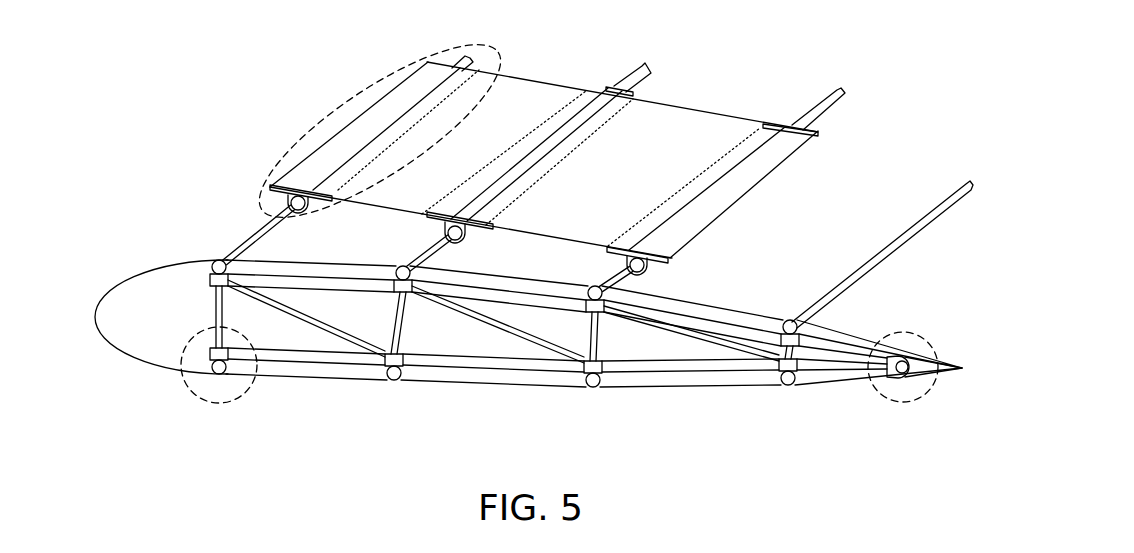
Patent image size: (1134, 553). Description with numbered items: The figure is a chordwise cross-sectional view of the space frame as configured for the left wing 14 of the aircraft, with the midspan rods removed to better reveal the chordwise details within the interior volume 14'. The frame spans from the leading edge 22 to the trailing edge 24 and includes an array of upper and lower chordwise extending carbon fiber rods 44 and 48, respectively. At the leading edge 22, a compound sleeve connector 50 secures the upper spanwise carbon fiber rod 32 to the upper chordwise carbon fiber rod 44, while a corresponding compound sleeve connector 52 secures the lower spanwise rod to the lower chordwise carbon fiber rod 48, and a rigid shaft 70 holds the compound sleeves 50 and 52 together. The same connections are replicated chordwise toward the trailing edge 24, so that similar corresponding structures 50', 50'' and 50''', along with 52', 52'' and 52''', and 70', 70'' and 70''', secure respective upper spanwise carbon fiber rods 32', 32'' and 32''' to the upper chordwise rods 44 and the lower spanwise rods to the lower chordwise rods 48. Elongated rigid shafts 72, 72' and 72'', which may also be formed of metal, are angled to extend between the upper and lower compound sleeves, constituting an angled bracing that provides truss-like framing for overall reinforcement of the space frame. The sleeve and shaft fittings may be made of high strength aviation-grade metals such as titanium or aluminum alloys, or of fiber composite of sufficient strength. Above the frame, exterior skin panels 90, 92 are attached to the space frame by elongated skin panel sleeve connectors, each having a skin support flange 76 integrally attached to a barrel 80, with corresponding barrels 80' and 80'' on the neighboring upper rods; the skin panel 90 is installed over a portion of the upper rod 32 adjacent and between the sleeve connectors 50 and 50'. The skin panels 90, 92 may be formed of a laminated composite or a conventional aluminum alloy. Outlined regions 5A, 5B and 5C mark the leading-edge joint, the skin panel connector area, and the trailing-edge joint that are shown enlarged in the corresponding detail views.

The left wing 14 is at (397, 430).
The interior volume 14' is at (485, 388).
The leading edge 22 is at (110, 287).
The trailing edge 24 is at (950, 375).
The upper spanwise carbon fiber rod 32 is at (340, 160).
The upper spanwise carbon fiber rod 32' is at (518, 167).
The upper spanwise carbon fiber rod 32'' is at (705, 190).
The upper spanwise carbon fiber rod 32''' is at (871, 254).
The upper chordwise carbon fiber rod 44 is at (350, 287).
The lower chordwise carbon fiber rod 48 is at (727, 374).
The compound sleeve connector 50 is at (193, 259).
The compound sleeve connector 50' is at (378, 263).
The compound sleeve connector 50'' is at (564, 285).
The compound sleeve connector 50''' is at (758, 316).
The compound sleeve connector 52 is at (182, 380).
The compound sleeve connector 52' is at (357, 380).
The compound sleeve connector 52'' is at (635, 387).
The compound sleeve connector 52''' is at (827, 386).
The rigid shaft 70 is at (198, 317).
The rigid shaft 70' is at (379, 323).
The rigid shaft 70'' is at (568, 336).
The rigid shaft 70''' is at (828, 334).
The elongated rigid shaft 72 is at (306, 318).
The elongated rigid shaft 72' is at (498, 324).
The elongated rigid shaft 72'' is at (691, 333).
The skin support flange 76 is at (403, 98).
The barrel 80 is at (311, 218).
The barrel 80' is at (470, 247).
The barrel 80'' is at (657, 275).
The exterior skin panel 90 is at (478, 153).
The exterior skin panel 92 is at (627, 191).
The detail view indicator 5A is at (243, 396).
The detail view indicator 5B is at (353, 98).
The detail view indicator 5C is at (905, 333).